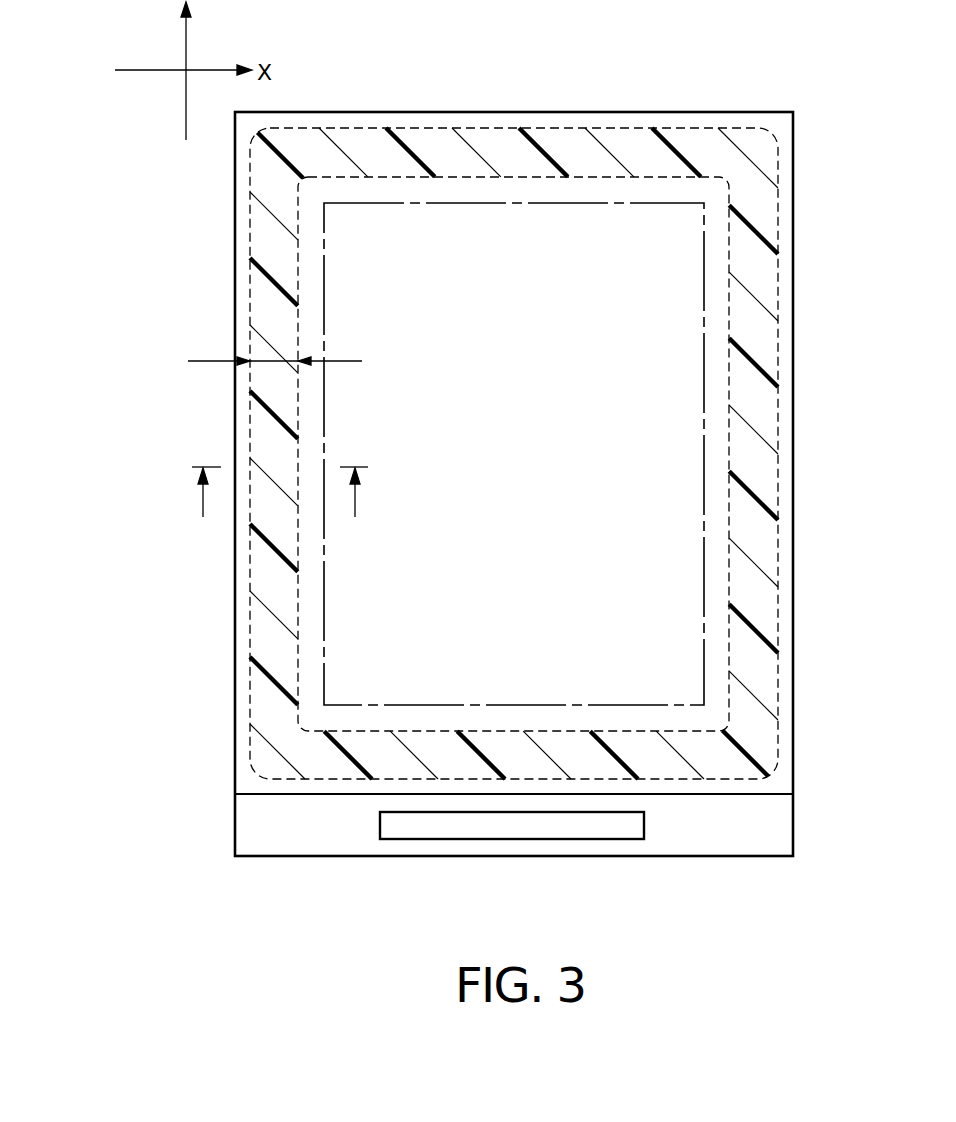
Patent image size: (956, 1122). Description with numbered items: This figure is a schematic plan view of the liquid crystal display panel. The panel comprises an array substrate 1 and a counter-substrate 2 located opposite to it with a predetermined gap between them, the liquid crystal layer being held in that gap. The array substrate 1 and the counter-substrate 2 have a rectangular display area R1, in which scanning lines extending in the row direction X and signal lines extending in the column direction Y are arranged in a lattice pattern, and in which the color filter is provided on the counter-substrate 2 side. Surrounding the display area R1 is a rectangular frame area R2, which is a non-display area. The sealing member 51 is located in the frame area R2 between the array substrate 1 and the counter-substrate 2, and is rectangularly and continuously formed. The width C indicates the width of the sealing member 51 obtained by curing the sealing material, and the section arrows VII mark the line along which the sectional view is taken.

The array substrate 1 is at (712, 841).
The counter-substrate 2 is at (410, 788).
The sealing member 51 is at (676, 128).
The display area R1 is at (490, 704).
The frame area R2 is at (740, 122).
The width of the sealing member C is at (270, 359).
The section line VII is at (280, 492).